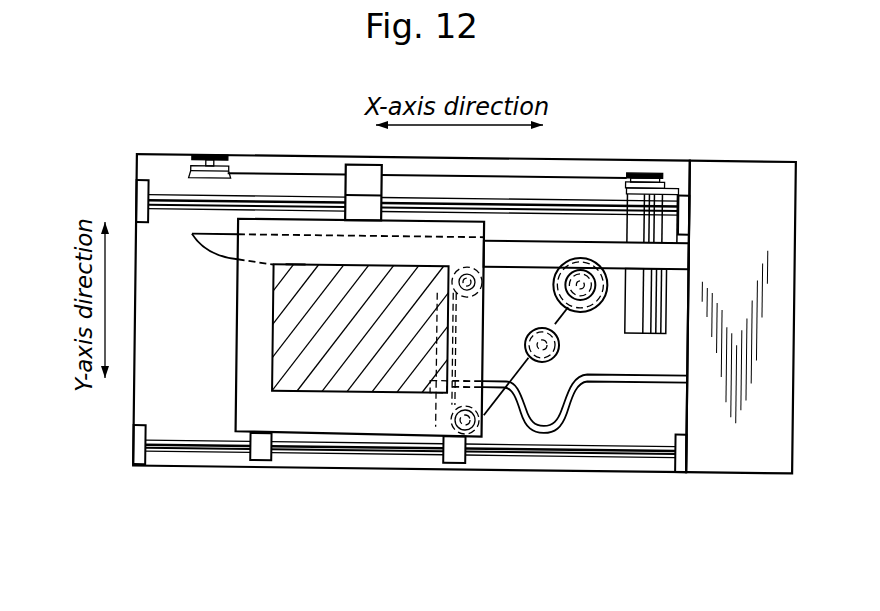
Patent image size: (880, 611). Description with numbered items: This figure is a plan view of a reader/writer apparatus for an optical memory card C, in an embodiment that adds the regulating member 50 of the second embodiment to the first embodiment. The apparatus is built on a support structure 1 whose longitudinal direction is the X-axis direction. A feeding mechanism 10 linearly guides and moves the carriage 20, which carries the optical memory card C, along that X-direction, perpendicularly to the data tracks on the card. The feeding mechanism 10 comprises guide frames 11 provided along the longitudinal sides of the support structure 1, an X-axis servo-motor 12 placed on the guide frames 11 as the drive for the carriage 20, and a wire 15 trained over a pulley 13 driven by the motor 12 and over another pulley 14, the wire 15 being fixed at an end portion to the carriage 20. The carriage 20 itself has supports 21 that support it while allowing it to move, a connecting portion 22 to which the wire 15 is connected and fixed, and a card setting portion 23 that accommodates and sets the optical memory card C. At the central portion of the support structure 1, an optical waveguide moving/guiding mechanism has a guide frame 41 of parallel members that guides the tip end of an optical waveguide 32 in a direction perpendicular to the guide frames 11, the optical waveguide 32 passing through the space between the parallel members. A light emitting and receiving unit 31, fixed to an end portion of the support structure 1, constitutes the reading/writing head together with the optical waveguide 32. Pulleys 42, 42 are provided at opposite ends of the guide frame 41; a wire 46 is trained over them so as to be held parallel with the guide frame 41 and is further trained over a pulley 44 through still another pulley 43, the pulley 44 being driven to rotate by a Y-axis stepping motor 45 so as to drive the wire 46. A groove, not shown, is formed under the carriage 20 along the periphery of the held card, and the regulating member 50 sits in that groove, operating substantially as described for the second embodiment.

The support structure 1 is at (796, 186).
The feeding mechanism 10 is at (674, 156).
The guide frames 11 is at (172, 213).
The X-axis servo-motor 12 is at (686, 220).
The pulley 13 is at (637, 171).
The pulley 14 is at (190, 160).
The wire 15 is at (562, 176).
The carriage 20 is at (262, 221).
The supports 21 is at (373, 198).
The connecting portion 22 is at (356, 176).
The card setting portion 23 is at (282, 323).
The light emitting and receiving unit 31 is at (738, 452).
The optical waveguide 32 is at (636, 380).
The guide frame 41 is at (438, 403).
The pulleys 42 is at (478, 270).
The pulley 43 is at (545, 361).
The pulley 44 is at (590, 303).
The Y-axis stepping motor 45 is at (556, 283).
The wire 46 is at (503, 398).
The regulating member 50 is at (548, 261).
The optical memory card C is at (295, 266).